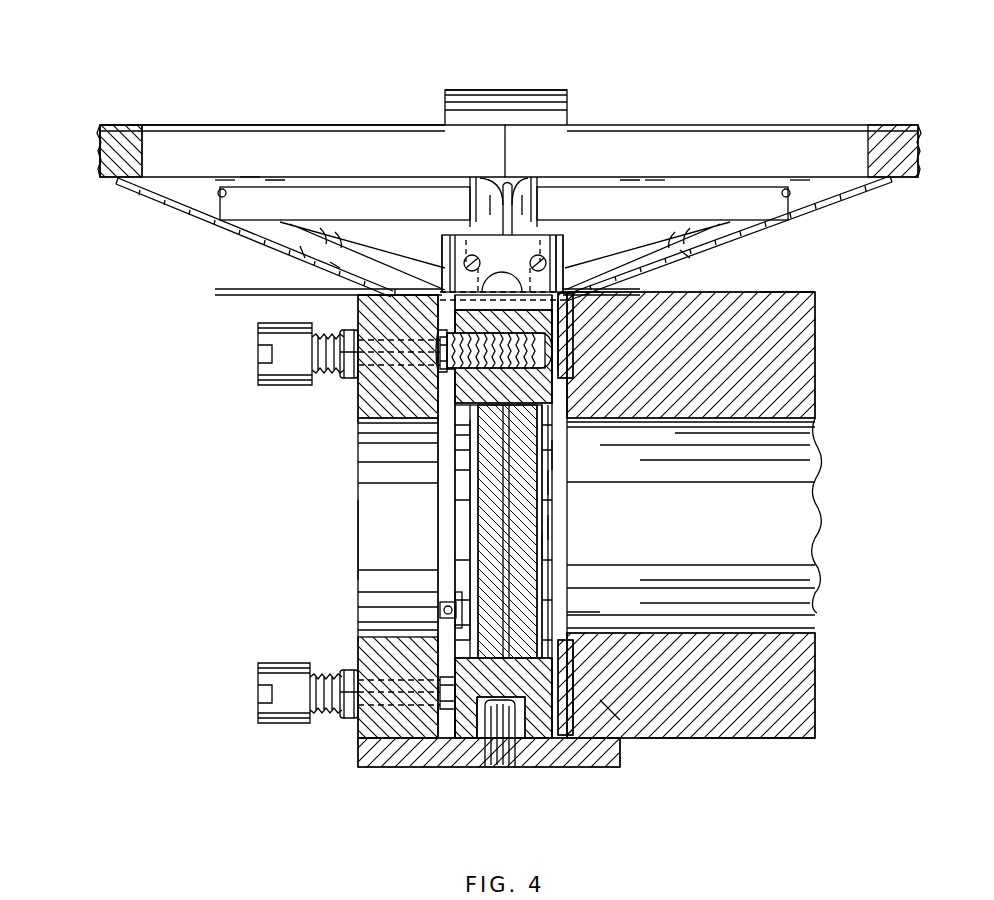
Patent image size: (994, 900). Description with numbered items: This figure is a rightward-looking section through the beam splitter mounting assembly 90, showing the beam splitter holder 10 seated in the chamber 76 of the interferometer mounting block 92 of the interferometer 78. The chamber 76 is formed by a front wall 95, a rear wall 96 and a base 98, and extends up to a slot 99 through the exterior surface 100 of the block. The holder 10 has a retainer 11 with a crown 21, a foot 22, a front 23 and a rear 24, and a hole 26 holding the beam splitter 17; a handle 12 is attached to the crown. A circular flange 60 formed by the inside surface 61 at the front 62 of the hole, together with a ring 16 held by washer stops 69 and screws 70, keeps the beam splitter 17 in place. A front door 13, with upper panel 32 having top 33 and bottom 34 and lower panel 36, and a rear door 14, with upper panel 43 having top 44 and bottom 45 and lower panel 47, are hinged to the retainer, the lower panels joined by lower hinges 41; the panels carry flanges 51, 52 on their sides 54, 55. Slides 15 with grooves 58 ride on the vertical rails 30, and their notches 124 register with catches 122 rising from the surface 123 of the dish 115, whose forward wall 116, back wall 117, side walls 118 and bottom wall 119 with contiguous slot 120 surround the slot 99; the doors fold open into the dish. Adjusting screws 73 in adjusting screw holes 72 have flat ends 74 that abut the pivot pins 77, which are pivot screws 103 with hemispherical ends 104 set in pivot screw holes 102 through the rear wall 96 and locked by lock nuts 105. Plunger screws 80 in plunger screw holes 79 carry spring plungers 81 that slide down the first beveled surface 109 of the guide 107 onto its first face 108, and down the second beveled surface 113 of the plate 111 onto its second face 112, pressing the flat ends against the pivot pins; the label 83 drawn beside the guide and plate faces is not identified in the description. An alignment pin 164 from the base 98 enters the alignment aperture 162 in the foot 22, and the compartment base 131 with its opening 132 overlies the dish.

The beam splitter holder 10 is at (564, 84).
The retainer 11 is at (540, 746).
The handle 12 is at (494, 140).
The front door 13 is at (685, 182).
The rear door 14 is at (355, 180).
The slides 15 is at (494, 269).
The ring 16 is at (465, 500).
The beam splitter 17 is at (478, 512).
The crown 21 is at (528, 202).
The foot 22 is at (470, 700).
The front 23 is at (565, 394).
The rear 24 is at (375, 437).
The hole 26 is at (540, 506).
The vertical rail 30 is at (500, 210).
The upper panel 32 is at (652, 182).
The top 33 is at (538, 186).
The bottom 34 is at (798, 182).
The lower panel 36 is at (682, 256).
The lower hinge 41 is at (218, 193).
The upper panel 43 is at (248, 178).
The top 44 is at (474, 186).
The bottom 45 is at (224, 190).
The lower panel 47 is at (332, 264).
The flange 51 is at (366, 211).
The flange 52 is at (368, 249).
The side 54 is at (272, 180).
The side 55 is at (305, 250).
The groove 58 is at (508, 200).
The circular flange 60 is at (550, 484).
The inside surface 61 is at (548, 546).
The front of the hole 62 is at (550, 526).
The washer stop 69 is at (458, 598).
The screw 70 is at (440, 611).
The adjusting screw hole 72 is at (352, 330).
The adjusting screw 73 is at (450, 418).
The flat end 74 is at (371, 531).
The chamber 76 is at (445, 458).
The pivot pin 77 is at (445, 354).
The interferometer 78 is at (760, 750).
The plunger screw hole 79 is at (568, 326).
The plunger screw 80 is at (505, 304).
The spring plunger 81 is at (556, 352).
The retaining nut 83 is at (576, 362).
The beam splitter mounting assembly 90 is at (408, 116).
The interferometer mounting block 92 is at (800, 292).
The front wall 95 is at (560, 447).
The rear wall 96 is at (358, 521).
The base 98 is at (386, 769).
The slot 99 is at (372, 290).
The exterior surface 100 is at (790, 290).
The pivot screw hole 102 is at (235, 748).
The pivot screw 103 is at (262, 352).
The hemispherical end 104 is at (330, 573).
The lock nut 105 is at (338, 373).
The guide 107 is at (570, 374).
The first face 108 is at (650, 342).
The first beveled surface 109 is at (566, 290).
The plate 111 is at (610, 706).
The second face 112 is at (632, 690).
The second beveled surface 113 is at (568, 614).
The dish 115 is at (196, 218).
The forward wall 116 is at (832, 200).
The back wall 117 is at (162, 200).
The side wall 118 is at (828, 214).
The bottom wall 119 is at (432, 290).
The contiguous slot 120 is at (442, 288).
The catch 122 is at (540, 252).
The surface 123 is at (475, 253).
The notch 124 is at (560, 292).
The base 131 is at (118, 126).
The opening 132 is at (180, 126).
The alignment aperture 162 is at (477, 746).
The alignment pin 164 is at (500, 768).